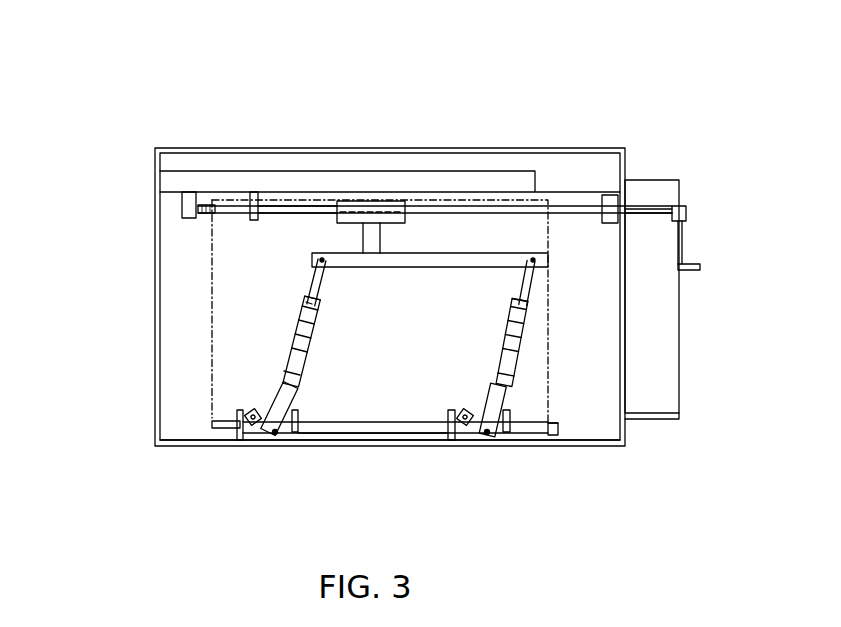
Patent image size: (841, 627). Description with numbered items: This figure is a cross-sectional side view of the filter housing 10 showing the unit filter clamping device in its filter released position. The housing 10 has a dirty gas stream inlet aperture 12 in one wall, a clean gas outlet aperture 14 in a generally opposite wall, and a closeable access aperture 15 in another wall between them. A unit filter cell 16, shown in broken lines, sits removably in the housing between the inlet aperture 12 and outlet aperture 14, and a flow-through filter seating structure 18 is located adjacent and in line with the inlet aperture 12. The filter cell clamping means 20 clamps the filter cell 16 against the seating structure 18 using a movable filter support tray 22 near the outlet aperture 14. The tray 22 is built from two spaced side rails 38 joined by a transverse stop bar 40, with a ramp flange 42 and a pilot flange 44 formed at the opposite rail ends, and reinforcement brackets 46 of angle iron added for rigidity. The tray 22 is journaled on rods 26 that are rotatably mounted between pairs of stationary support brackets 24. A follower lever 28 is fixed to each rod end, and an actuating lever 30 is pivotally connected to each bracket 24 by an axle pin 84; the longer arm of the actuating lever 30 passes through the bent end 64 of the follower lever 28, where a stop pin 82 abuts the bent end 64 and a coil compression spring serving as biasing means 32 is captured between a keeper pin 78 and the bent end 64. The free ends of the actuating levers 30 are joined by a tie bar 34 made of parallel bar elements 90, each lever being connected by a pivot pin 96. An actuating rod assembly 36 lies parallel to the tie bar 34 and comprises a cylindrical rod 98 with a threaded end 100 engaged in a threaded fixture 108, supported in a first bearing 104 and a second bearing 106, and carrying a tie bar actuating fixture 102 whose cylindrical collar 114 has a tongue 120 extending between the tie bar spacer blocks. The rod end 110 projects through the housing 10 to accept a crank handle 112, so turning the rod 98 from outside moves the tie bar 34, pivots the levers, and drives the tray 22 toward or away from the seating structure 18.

The filter housing 10 is at (692, 66).
The dirty gas stream inlet aperture 12 is at (535, 153).
The clean gas outlet aperture 14 is at (233, 443).
The closeable access aperture 15 is at (678, 397).
The unit filter cell 16 is at (235, 267).
The flow-through filter seating structure 18 is at (167, 178).
The filter cell clamping means 20 is at (235, 340).
The movable filter support tray 22 is at (352, 427).
The stationary support brackets 24 is at (265, 434).
The rods 26 is at (277, 433).
The follower lever 28 is at (300, 375).
The actuating lever 30 is at (287, 383).
The biasing means 32 is at (307, 332).
The tie bars 34 is at (437, 253).
The actuating rod assemblies 36 is at (410, 200).
The side rails 38 is at (525, 432).
The stop bar 40 is at (217, 427).
The ramp flange 42 is at (550, 433).
The pilot flange 44 is at (562, 430).
The reinforcement brackets 46 is at (408, 437).
The bent end 64 is at (307, 297).
The keeper pin 78 is at (287, 365).
The stop pin 82 is at (320, 298).
The axle pin 84 is at (237, 425).
The bar elements 90 is at (449, 258).
The pivot pin 96 is at (317, 257).
The cylindrical rod 98 is at (300, 200).
The threaded end 100 is at (208, 215).
The tie bar actuating fixture 102 is at (352, 205).
The first bearing 104 is at (612, 195).
The second bearing 106 is at (255, 200).
The threaded fixture 108 is at (190, 195).
The rod end 110 is at (642, 207).
The crank handle 112 is at (680, 258).
The cylindrical collar 114 is at (402, 200).
The tongue 120 is at (380, 238).